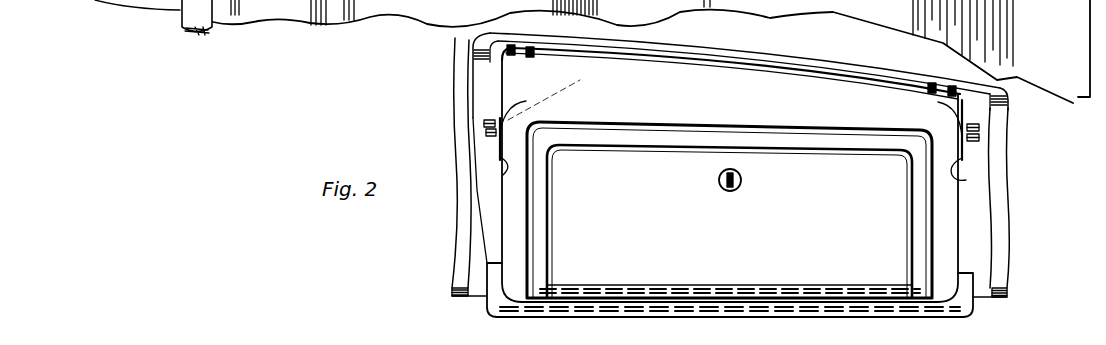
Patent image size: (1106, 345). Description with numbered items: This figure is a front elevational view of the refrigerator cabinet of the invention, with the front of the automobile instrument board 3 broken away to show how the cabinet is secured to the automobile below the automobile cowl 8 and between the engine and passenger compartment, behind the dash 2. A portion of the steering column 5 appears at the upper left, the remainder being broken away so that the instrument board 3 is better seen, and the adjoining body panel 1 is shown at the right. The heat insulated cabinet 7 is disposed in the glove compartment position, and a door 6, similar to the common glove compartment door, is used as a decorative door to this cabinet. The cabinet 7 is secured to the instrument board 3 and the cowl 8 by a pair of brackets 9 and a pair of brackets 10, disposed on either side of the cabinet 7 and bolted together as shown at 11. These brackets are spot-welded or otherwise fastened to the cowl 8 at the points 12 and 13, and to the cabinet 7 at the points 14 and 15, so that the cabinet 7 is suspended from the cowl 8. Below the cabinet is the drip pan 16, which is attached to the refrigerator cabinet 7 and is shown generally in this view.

The wall panel 1 is at (1066, 99).
The dash 2 is at (472, 216).
The instrument board 3 is at (462, 255).
The steering column 5 is at (186, 8).
The door 6 is at (893, 231).
The heat insulated cabinet 7 is at (958, 254).
The automobile cowl 8 is at (604, 50).
The brackets 9 is at (497, 83).
The brackets 10 is at (498, 148).
The bolt 11 is at (484, 125).
The spot-weld fastening 12 is at (508, 45).
The spot-weld fastening 13 is at (530, 48).
The cabinet fastening 14 is at (507, 117).
The cabinet fastening 15 is at (505, 173).
The drip pan 16 is at (973, 306).